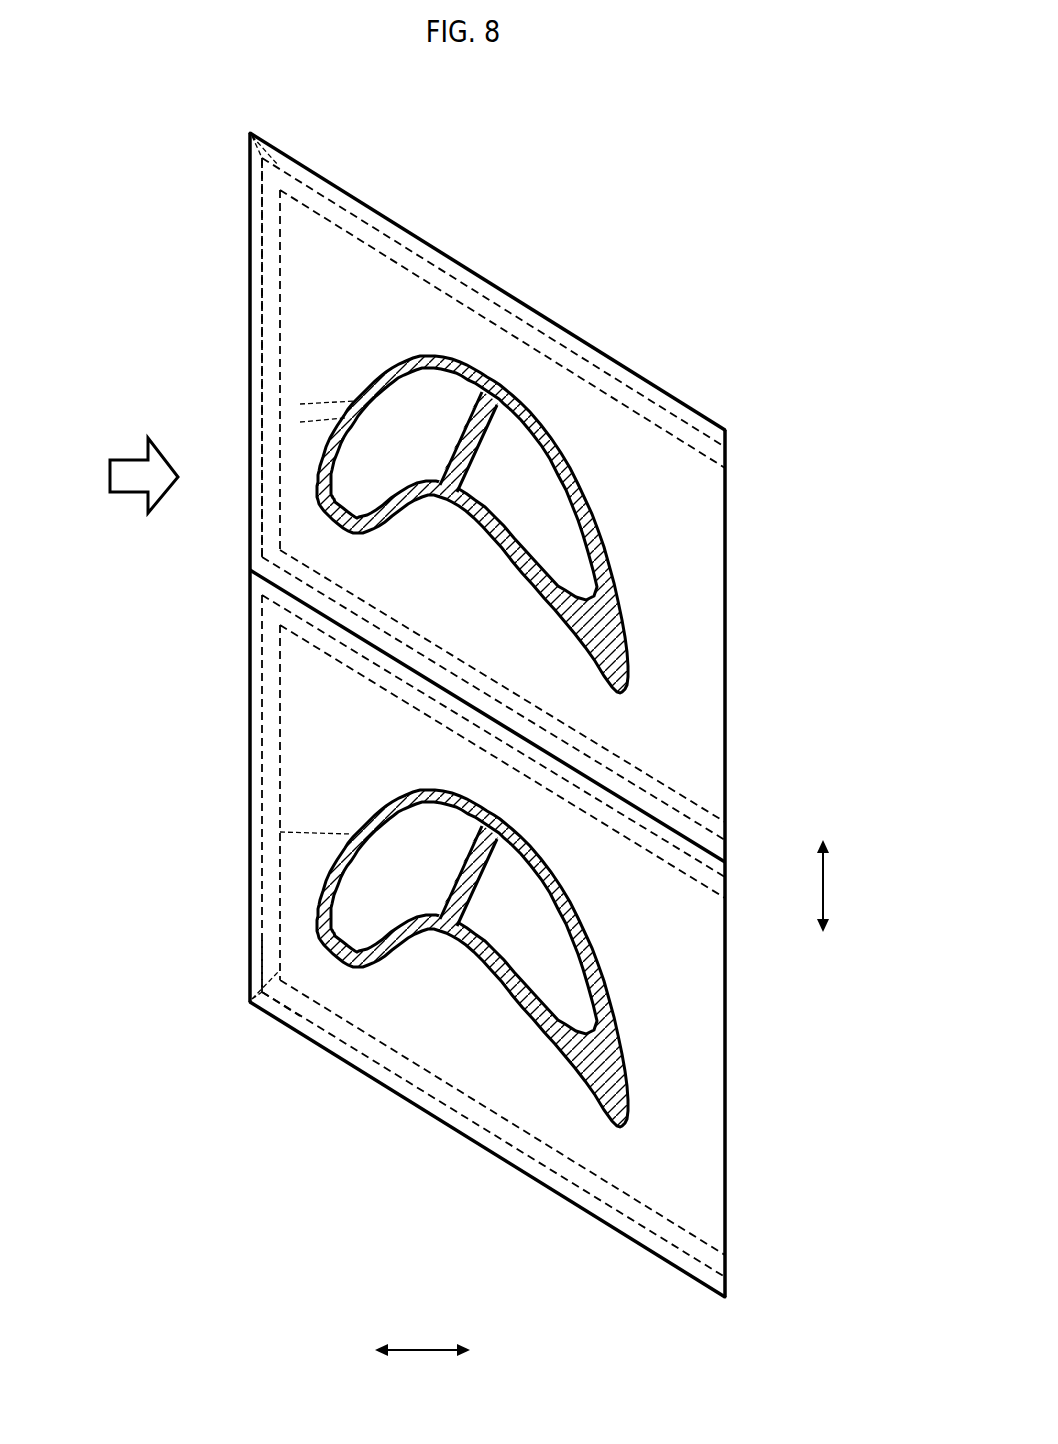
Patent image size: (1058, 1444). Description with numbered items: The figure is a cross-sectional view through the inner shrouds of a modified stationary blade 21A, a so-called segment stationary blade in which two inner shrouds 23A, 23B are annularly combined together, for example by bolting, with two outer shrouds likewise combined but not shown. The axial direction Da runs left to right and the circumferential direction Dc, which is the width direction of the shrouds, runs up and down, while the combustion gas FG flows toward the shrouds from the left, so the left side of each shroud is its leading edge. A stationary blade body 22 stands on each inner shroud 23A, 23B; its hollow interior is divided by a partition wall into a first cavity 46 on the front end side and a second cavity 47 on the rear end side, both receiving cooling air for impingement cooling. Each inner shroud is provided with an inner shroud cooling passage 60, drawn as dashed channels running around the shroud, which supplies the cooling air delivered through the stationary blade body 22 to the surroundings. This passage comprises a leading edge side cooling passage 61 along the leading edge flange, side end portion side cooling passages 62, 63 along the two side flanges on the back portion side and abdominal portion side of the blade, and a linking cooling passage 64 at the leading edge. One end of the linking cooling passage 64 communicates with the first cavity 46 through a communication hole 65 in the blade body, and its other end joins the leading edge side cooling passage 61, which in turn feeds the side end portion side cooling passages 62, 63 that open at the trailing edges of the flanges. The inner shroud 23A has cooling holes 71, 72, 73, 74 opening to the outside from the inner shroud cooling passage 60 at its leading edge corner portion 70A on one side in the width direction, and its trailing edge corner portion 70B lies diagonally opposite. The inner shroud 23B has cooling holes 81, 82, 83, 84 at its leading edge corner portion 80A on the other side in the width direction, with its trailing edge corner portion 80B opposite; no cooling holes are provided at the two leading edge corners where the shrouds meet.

The stationary blade 21A is at (160, 365).
The stationary blade body 22 is at (560, 440).
The inner shroud 23A is at (502, 285).
The inner shroud 23B is at (459, 1145).
The first cavity 46 is at (440, 385).
The second cavity 47 is at (513, 457).
The inner shroud cooling passage 60 is at (246, 253).
The leading edge side cooling passage 61 is at (263, 398).
The side end portion side cooling passage 62 is at (417, 255).
The side end portion side cooling passage 63 is at (690, 778).
The linking cooling passage 64 is at (318, 400).
The communication hole 65 is at (352, 400).
The leading edge corner portion 70A is at (250, 122).
The trailing edge corner portion 70B is at (727, 420).
The cooling hole 71 is at (194, 138).
The cooling hole 74 is at (260, 152).
The cooling hole 72 is at (292, 168).
The cooling hole 73 is at (260, 222).
The leading edge corner portion 80A is at (250, 1013).
The trailing edge corner portion 80B is at (728, 1310).
The cooling hole 81 is at (181, 996).
The cooling hole 84 is at (258, 1000).
The cooling hole 82 is at (292, 1030).
The cooling hole 83 is at (258, 968).
The combustion gas FG is at (128, 468).
The circumferential direction Dc is at (840, 886).
The axial direction Da is at (422, 1364).